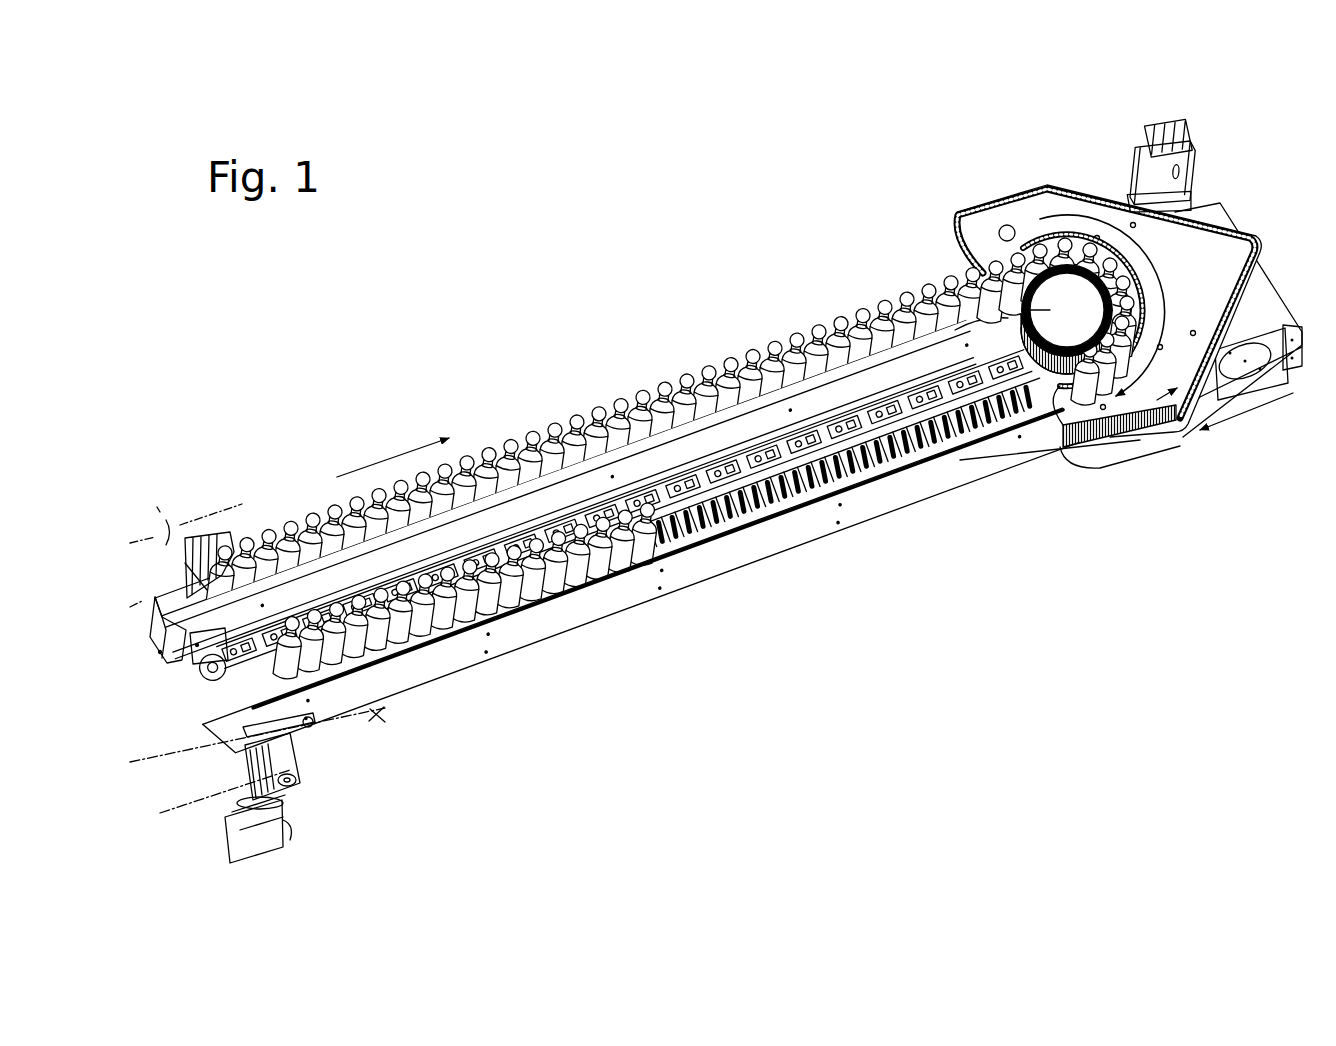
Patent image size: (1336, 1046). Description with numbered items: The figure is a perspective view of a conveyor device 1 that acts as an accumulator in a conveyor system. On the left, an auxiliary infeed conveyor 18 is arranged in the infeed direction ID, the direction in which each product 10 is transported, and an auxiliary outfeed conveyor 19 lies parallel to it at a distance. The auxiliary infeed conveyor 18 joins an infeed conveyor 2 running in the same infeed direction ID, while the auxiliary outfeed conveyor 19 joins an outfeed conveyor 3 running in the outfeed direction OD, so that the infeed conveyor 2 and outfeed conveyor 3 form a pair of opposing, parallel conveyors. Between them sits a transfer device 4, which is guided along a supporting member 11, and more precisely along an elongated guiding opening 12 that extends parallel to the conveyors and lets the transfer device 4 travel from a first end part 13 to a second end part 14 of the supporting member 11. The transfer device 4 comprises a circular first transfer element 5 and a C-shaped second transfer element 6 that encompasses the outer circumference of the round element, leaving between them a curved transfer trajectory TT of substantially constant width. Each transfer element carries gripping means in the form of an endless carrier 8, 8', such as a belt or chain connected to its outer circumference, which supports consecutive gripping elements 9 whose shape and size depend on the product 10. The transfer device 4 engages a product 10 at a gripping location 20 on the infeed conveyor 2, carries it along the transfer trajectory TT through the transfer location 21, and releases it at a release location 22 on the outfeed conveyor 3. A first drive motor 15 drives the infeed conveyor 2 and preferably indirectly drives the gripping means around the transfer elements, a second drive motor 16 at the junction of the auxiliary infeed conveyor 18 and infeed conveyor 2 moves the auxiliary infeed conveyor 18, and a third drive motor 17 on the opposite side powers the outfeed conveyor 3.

The conveyor device 1 is at (505, 358).
The infeed conveyor 2 is at (852, 312).
The outfeed conveyor 3 is at (897, 483).
The transfer device 4 is at (1018, 222).
The first transfer element 5 is at (970, 287).
The second transfer element 6 is at (1174, 432).
The endless carrier of the second transfer element 8 is at (1120, 456).
The endless carrier of the first transfer element 8' is at (1054, 419).
The gripping element of the second transfer element 9 is at (1013, 342).
The product 10 is at (620, 410).
The supporting member 11 is at (687, 497).
The guiding opening 12 is at (780, 452).
The first end part of the supporting member 13 is at (197, 668).
The second end part of the supporting member 14 is at (1248, 220).
The first drive motor 15 is at (1140, 162).
The second drive motor 16 is at (208, 537).
The third drive motor 17 is at (303, 762).
The auxiliary infeed conveyor 18 is at (150, 498).
The auxiliary outfeed conveyor 19 is at (397, 708).
The gripping location 20 is at (973, 288).
The transfer location 21 is at (1077, 240).
The release location 22 is at (1058, 378).
The transfer trajectory TT is at (1112, 305).
The infeed direction ID is at (393, 452).
The outfeed direction OD is at (1246, 419).